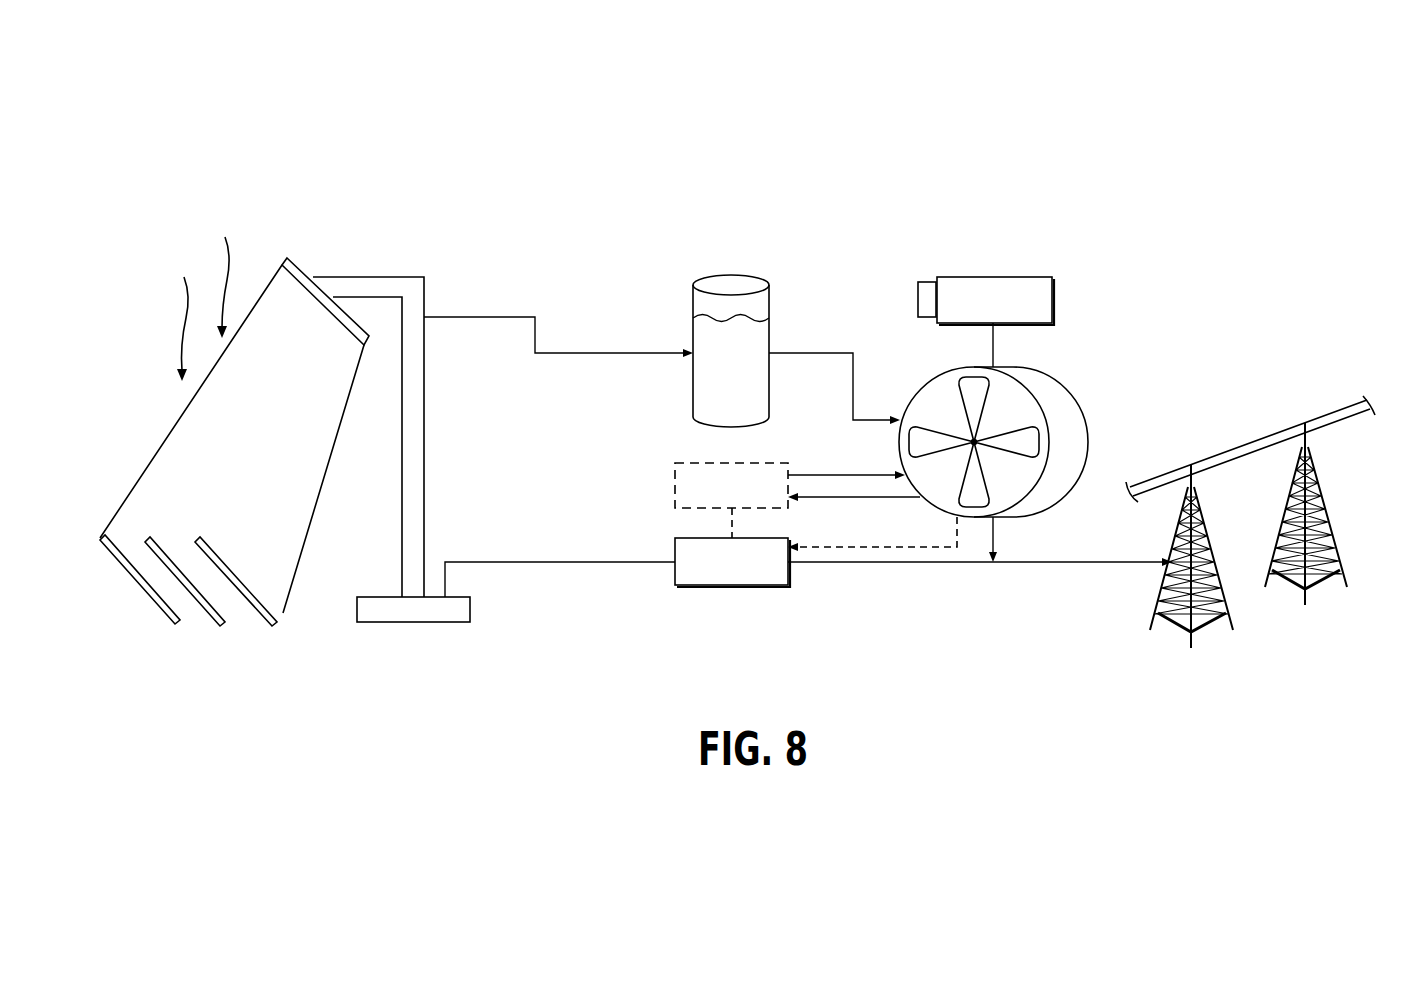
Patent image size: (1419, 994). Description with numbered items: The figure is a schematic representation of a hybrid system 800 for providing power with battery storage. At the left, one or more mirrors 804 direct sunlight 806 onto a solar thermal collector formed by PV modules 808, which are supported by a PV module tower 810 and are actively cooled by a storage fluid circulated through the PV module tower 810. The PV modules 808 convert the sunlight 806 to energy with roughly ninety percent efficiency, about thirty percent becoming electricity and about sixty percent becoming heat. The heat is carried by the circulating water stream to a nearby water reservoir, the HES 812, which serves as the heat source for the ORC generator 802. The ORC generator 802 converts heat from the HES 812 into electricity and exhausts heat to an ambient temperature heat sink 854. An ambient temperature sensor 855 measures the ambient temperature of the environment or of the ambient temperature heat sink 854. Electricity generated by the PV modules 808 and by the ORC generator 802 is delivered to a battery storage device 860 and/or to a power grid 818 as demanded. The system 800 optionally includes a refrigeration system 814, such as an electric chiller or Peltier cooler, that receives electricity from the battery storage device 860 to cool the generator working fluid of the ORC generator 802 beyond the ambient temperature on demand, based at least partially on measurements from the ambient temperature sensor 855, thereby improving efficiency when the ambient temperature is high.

The system 800 is at (1337, 158).
The ORC generator 802 is at (1088, 442).
The mirrors 804 is at (227, 618).
The sunlight 806 is at (182, 325).
The PV modules 808 is at (289, 258).
The PV module tower 810 is at (424, 420).
The HES 812 is at (769, 388).
The refrigeration system 814 is at (731, 485).
The power grid 818 is at (1327, 525).
The ambient temperature heat sink 854 is at (995, 301).
The ambient temperature sensor 855 is at (928, 281).
The battery storage device 860 is at (732, 562).